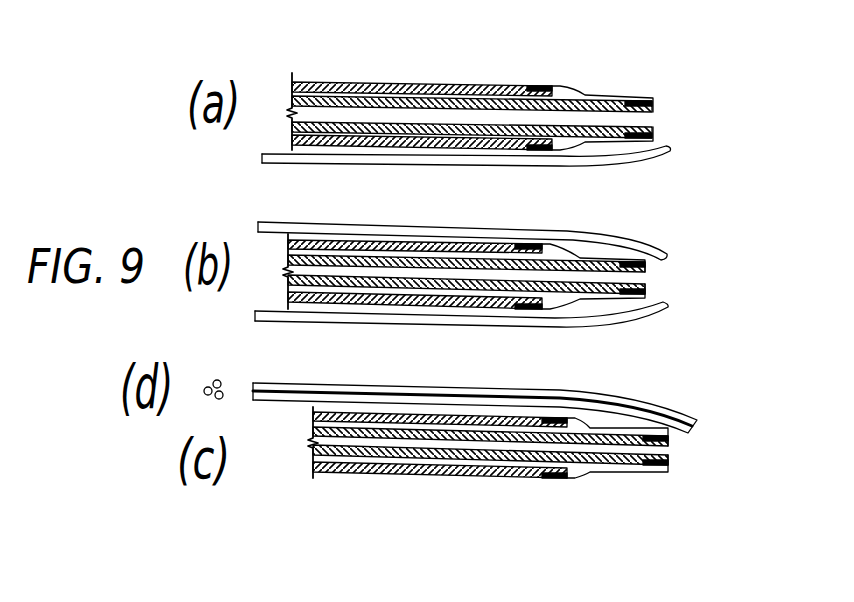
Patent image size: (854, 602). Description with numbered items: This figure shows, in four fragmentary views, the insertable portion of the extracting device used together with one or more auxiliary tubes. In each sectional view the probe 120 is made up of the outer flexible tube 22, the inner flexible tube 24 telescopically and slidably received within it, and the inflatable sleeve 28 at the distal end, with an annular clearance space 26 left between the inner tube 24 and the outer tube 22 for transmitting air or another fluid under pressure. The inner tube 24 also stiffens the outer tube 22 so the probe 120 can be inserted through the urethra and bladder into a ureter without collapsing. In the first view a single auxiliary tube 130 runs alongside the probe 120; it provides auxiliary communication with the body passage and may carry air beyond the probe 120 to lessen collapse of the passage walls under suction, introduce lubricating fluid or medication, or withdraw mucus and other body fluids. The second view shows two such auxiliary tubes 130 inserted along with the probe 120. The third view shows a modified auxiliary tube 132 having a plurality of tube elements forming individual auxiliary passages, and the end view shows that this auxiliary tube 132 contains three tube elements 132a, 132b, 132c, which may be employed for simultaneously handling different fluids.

The outer flexible tube 22 is at (363, 79).
The inner flexible tube 24 is at (415, 106).
The annular clearance space 26 is at (292, 90).
The inflatable sleeve 28 is at (625, 97).
The probe 120 is at (491, 297).
The auxiliary tube 130 is at (505, 167).
The modified auxiliary tube 132 is at (402, 397).
The tube element 132a is at (218, 380).
The tube element 132b is at (221, 400).
The tube element 132c is at (205, 394).